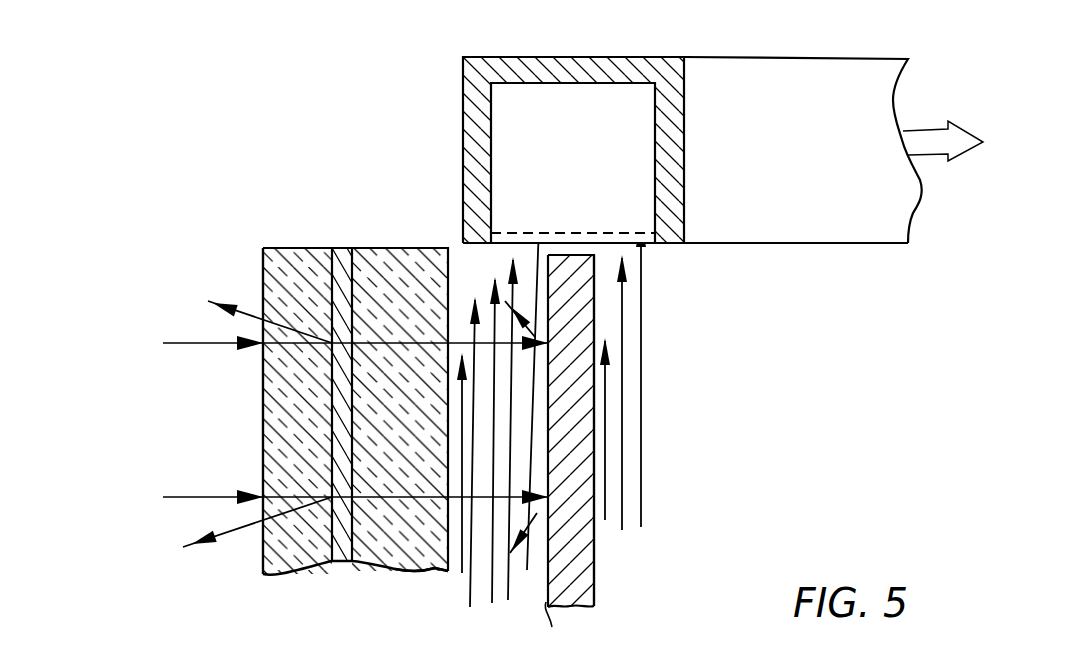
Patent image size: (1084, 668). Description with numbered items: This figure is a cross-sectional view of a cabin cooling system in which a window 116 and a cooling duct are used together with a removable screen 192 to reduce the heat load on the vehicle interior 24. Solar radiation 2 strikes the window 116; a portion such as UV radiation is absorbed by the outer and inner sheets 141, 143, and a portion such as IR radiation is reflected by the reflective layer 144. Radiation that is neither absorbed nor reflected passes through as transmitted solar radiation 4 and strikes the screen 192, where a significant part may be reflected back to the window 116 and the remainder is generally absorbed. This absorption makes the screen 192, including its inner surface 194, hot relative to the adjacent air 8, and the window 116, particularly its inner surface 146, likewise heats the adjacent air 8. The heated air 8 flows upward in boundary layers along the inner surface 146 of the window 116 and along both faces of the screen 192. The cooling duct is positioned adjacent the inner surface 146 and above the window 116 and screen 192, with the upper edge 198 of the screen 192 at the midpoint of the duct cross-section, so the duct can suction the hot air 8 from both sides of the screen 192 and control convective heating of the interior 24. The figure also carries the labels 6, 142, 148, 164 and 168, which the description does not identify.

The solar radiation 2 is at (210, 497).
The transmitted solar radiation 4 is at (535, 337).
The reflected radiation 6 is at (250, 310).
The heated air 8 is at (474, 308).
The vehicle interior 24 is at (853, 316).
The window 116 is at (298, 586).
The outer sheet 141 is at (284, 247).
The outer surface 142 is at (262, 258).
The inner sheet 143 is at (428, 571).
The reflective layer 144 is at (342, 561).
The inner surface 146 is at (458, 576).
The inner pane 148 is at (385, 247).
The lower wall 164 is at (650, 246).
The duct 168 is at (827, 117).
The screen 192 is at (600, 602).
The inner surface 194 is at (597, 560).
The upper edge 198 is at (592, 255).